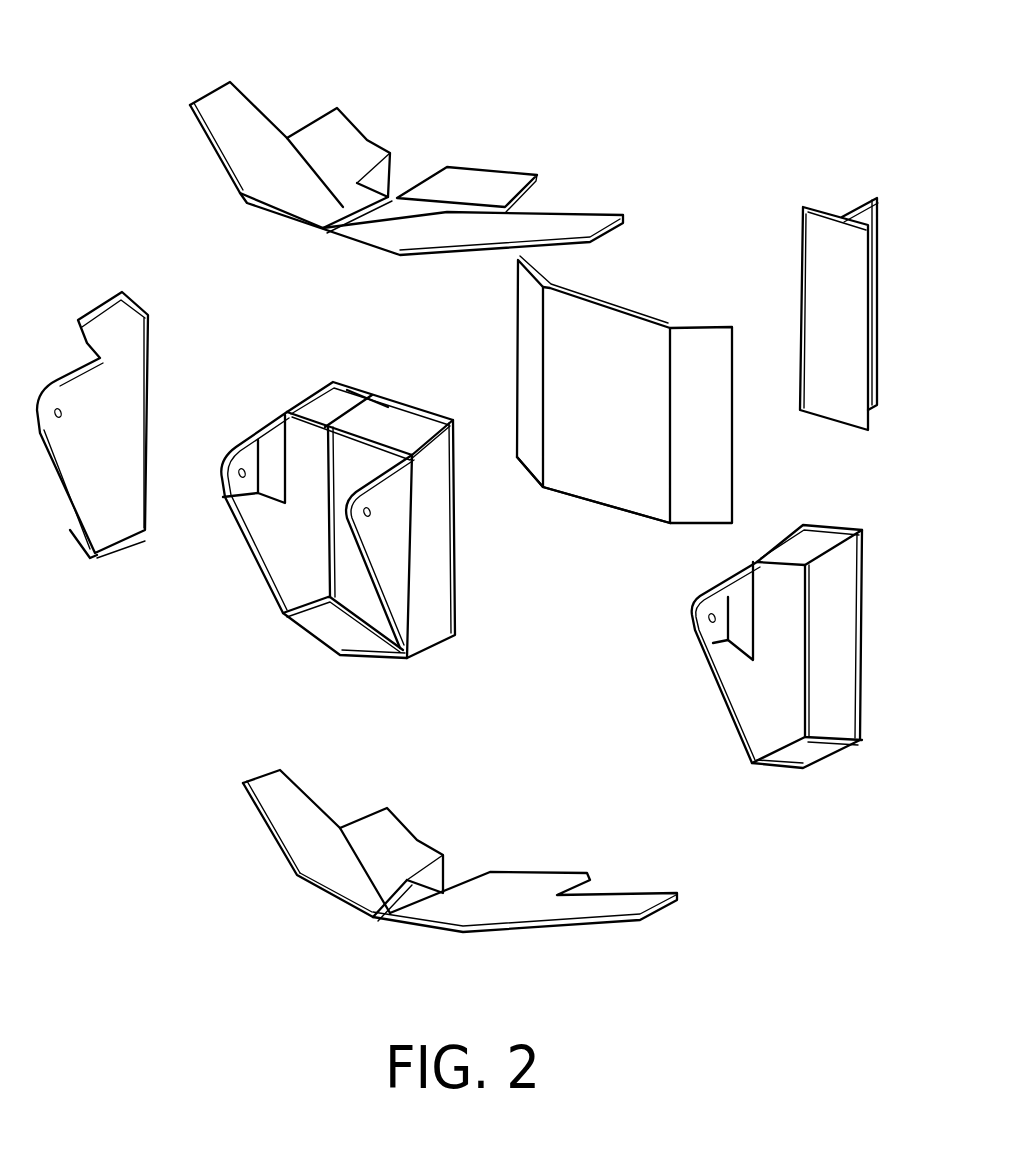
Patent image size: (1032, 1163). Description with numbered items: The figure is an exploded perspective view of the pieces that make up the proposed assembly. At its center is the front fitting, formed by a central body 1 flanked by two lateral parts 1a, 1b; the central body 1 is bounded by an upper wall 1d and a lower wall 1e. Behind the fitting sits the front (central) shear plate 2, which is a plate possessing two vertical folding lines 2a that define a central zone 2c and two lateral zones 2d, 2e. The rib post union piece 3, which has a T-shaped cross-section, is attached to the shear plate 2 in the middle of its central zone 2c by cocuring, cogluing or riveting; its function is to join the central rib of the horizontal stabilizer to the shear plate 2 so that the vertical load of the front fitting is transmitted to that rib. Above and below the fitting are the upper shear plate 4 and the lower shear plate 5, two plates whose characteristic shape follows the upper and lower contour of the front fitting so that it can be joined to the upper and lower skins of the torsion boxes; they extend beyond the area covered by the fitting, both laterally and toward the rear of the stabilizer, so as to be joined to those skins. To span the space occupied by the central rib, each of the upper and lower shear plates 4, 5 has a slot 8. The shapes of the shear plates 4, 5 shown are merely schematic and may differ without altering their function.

The central body of the front fitting 1 is at (333, 529).
The lateral part of the front fitting 1a is at (92, 572).
The lateral part of the front fitting 1b is at (813, 773).
The upper wall of the central body 1d is at (343, 402).
The lower wall of the central body 1e is at (322, 623).
The central shear plate 2 is at (624, 418).
The vertical folding lines of the central shear plate 2a is at (637, 513).
The central zone of the central shear plate 2c is at (595, 389).
The lateral zone of the central shear plate 2d is at (701, 425).
The lateral zone of the central shear plate 2e is at (531, 373).
The rib post union piece 3 is at (842, 192).
The upper shear plate 4 is at (472, 153).
The lower shear plate 5 is at (357, 928).
The slot in the upper and lower shear plates 8 is at (387, 197).